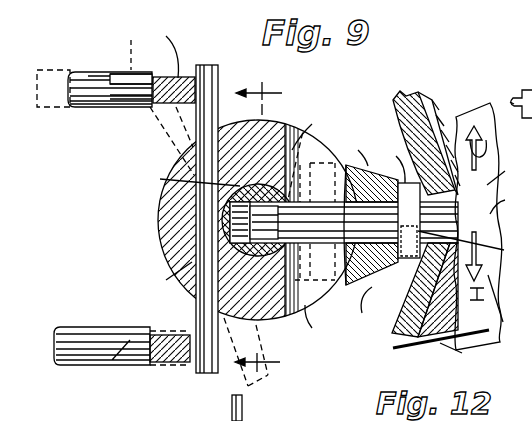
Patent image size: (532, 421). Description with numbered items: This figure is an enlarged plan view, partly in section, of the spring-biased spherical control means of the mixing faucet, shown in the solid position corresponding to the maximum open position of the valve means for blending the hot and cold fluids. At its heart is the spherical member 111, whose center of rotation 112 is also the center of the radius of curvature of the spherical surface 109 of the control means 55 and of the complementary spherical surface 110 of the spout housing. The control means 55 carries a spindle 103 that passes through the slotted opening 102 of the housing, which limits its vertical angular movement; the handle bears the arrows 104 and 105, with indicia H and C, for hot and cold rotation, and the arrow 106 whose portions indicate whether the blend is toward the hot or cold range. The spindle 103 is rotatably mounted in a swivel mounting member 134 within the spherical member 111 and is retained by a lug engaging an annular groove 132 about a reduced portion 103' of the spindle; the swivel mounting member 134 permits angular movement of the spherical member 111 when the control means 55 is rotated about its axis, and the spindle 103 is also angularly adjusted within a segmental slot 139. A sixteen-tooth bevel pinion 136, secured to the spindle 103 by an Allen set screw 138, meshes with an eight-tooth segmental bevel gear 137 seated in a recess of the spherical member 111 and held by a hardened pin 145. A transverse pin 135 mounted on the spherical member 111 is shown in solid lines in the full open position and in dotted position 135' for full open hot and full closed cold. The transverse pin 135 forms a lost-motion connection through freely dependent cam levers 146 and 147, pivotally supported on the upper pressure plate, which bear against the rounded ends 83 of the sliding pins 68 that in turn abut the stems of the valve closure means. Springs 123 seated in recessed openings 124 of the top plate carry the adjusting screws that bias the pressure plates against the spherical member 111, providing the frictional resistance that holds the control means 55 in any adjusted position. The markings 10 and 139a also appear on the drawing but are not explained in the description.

The direction of movement 10 is at (271, 228).
The control means 55 is at (465, 122).
The sliding pins 68 is at (86, 76).
The rounded ends 83 is at (112, 78).
The slotted opening 102 is at (403, 159).
The spindle 103 is at (475, 244).
The reduced portion of the spindle 103' is at (181, 175).
The arrow 104 is at (510, 305).
The arrow 105 is at (509, 171).
The arrow 106 is at (511, 200).
The spherical surface 109 is at (468, 354).
The spherical surface 110 is at (406, 91).
The spherical member 111 is at (170, 239).
The center of rotation 112 is at (232, 214).
The springs 123 is at (501, 98).
The recessed openings 124 is at (527, 92).
The annular groove 132 is at (228, 270).
The swivel mounting member 134 is at (314, 127).
The transverse pin 135 is at (204, 203).
The dotted position of the transverse pin 135' is at (147, 141).
The bevel pinion 136 is at (351, 147).
The bevel gear 137 is at (377, 309).
The Allen set screw 138 is at (378, 268).
The segmental slot 139 is at (161, 279).
The disc edge position 139a is at (297, 305).
The hardened pin 145 is at (329, 315).
The cam lever 146 is at (163, 356).
The cam lever 147 is at (155, 46).